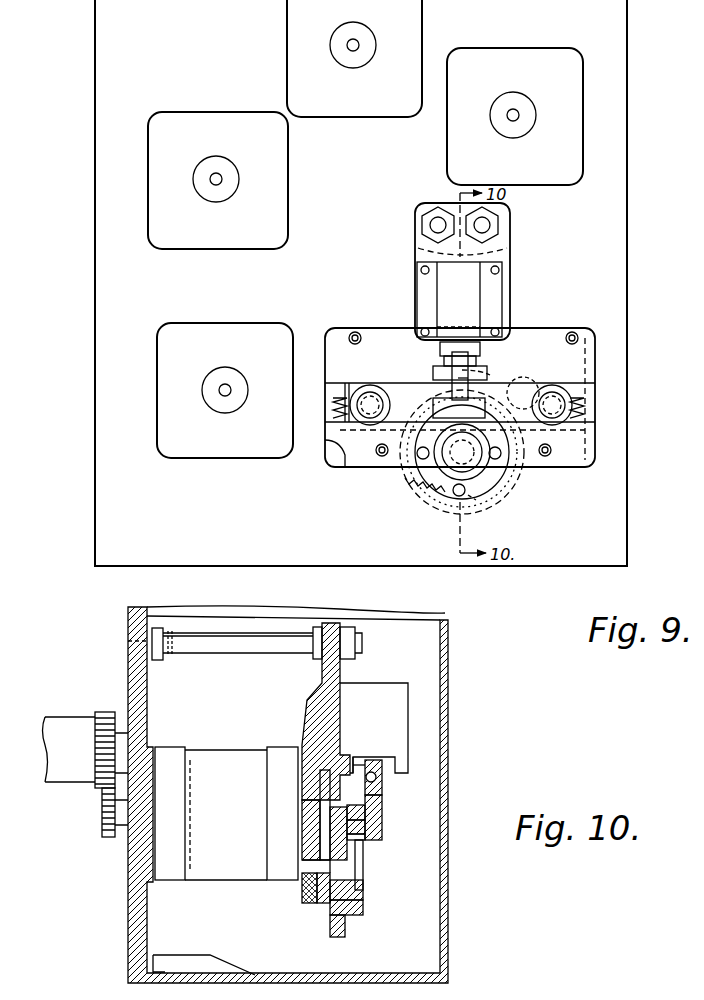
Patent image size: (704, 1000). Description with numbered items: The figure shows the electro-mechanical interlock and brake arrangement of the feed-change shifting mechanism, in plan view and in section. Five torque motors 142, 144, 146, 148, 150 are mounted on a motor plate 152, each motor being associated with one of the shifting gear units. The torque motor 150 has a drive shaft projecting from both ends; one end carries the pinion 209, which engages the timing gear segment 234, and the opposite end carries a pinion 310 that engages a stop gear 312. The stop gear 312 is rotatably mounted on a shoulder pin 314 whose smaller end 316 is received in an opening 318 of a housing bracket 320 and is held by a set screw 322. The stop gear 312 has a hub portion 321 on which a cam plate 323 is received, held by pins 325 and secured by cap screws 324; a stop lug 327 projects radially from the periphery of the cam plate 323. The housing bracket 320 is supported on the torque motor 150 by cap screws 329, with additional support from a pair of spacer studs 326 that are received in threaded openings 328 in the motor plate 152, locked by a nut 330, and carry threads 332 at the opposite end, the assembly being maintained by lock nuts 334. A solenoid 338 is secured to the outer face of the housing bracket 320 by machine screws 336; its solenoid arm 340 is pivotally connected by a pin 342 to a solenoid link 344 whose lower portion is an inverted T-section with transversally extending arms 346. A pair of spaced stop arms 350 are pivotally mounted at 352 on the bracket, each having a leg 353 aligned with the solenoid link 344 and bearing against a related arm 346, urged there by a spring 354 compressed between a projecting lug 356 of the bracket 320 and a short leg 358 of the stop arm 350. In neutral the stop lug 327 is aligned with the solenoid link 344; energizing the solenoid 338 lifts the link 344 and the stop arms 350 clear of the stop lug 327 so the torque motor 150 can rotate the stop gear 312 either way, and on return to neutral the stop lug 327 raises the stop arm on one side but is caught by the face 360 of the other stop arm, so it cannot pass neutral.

In FIG. 9, the torque motor 142 is at (300, 15).
In FIG. 9, the torque motor 144 is at (183, 118).
In FIG. 9, the torque motor 146 is at (187, 448).
In FIG. 9, the torque motor 148 is at (535, 52).
In FIG. 9, the torque motor 150 is at (597, 352).
In FIG. 10, the torque motor 150 is at (182, 755).
In FIG. 10, the motor plate 152 is at (128, 920).
In FIG. 10, the pinion 209 is at (106, 832).
In FIG. 10, the timing gear segment 234 is at (95, 787).
In FIG. 9, the pinion 310 is at (502, 402).
In FIG. 10, the pinion 310 is at (302, 793).
In FIG. 9, the stop gear 312 is at (433, 510).
In FIG. 10, the stop gear 312 is at (341, 938).
In FIG. 10, the shoulder pin 314 is at (352, 878).
In FIG. 10, the smaller end of shoulder pin 316 is at (327, 903).
In FIG. 10, the opening 318 is at (308, 880).
In FIG. 9, the housing bracket 320 is at (513, 252).
In FIG. 10, the housing bracket 320 is at (344, 678).
In FIG. 10, the hub portion 321 is at (352, 850).
In FIG. 9, the set screw 322 is at (472, 497).
In FIG. 10, the set screw 322 is at (312, 905).
In FIG. 9, the cam plate 323 is at (495, 480).
In FIG. 10, the cam plate 323 is at (366, 832).
In FIG. 9, the cap screws 324 is at (436, 471).
In FIG. 9, the pins 325 is at (458, 494).
In FIG. 10, the pins 325 is at (362, 906).
In FIG. 9, the spacer studs 326 is at (430, 222).
In FIG. 10, the spacer studs 326 is at (250, 648).
In FIG. 9, the stop lug 327 is at (450, 400).
In FIG. 10, the stop lug 327 is at (366, 821).
In FIG. 10, the threaded openings 328 is at (128, 641).
In FIG. 9, the cap screws 329 is at (548, 455).
In FIG. 10, the cap screws 329 is at (308, 745).
In FIG. 10, the nut 330 is at (150, 662).
In FIG. 10, the threads 332 is at (357, 643).
In FIG. 10, the lock nuts 334 is at (318, 657).
In FIG. 9, the machine screws 336 is at (421, 330).
In FIG. 9, the solenoid 338 is at (497, 288).
In FIG. 10, the solenoid 338 is at (395, 722).
In FIG. 9, the solenoid arm 340 is at (492, 376).
In FIG. 10, the solenoid arm 340 is at (395, 760).
In FIG. 9, the pin 342 is at (482, 362).
In FIG. 10, the pin 342 is at (384, 778).
In FIG. 9, the solenoid link 344 is at (468, 378).
In FIG. 10, the solenoid link 344 is at (385, 792).
In FIG. 9, the transversally extending arms 346 is at (423, 455).
In FIG. 10, the transversally extending arms 346 is at (376, 840).
In FIG. 9, the stop arms 350 is at (556, 390).
In FIG. 10, the stop arms 350 is at (372, 752).
In FIG. 9, the pivot of stop arm 352 is at (370, 390).
In FIG. 9, the leg 353 is at (386, 392).
In FIG. 9, the spring 354 is at (342, 432).
In FIG. 9, the projecting lug 356 is at (339, 470).
In FIG. 9, the short leg 358 is at (345, 386).
In FIG. 9, the face of stop arm 360 is at (455, 366).